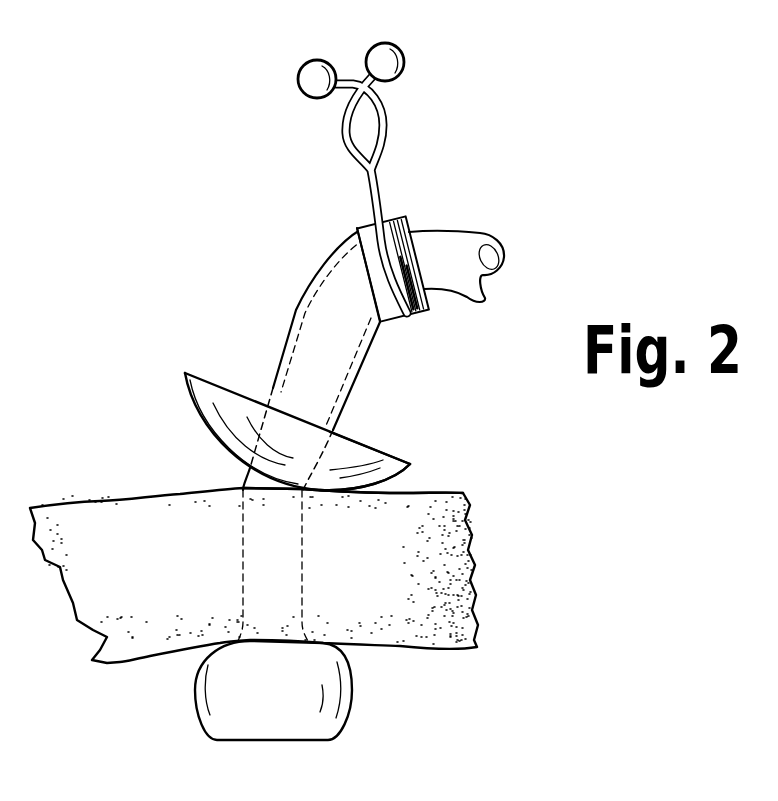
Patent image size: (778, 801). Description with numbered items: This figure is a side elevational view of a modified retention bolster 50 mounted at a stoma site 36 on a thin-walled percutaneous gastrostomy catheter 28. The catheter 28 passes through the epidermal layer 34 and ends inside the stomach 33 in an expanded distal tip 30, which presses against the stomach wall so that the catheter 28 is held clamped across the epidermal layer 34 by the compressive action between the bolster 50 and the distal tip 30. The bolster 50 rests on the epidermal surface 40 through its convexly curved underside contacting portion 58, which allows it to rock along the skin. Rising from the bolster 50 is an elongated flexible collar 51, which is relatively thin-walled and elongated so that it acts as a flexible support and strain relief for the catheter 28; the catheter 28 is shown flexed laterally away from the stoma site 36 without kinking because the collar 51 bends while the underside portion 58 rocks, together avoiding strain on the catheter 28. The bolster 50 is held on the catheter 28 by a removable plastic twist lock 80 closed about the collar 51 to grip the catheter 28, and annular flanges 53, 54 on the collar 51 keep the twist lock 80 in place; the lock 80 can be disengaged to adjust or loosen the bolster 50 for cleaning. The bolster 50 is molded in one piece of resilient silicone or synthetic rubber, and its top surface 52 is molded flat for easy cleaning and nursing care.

The catheter 28 is at (481, 233).
The expanded distal tip 30 is at (347, 718).
The stomach 33 is at (124, 715).
The epidermal layer 34 is at (147, 570).
The stoma site 36 is at (207, 470).
The epidermal surface 40 is at (397, 493).
The modified retention bolster 50 is at (387, 452).
The elongated flexible collar 51 is at (300, 312).
The top surface 52 is at (205, 374).
The annular flange 53 is at (360, 226).
The annular flange 54 is at (410, 217).
The convexly curved underside contacting portion 58 is at (337, 492).
The removable plastic twist lock 80 is at (387, 127).